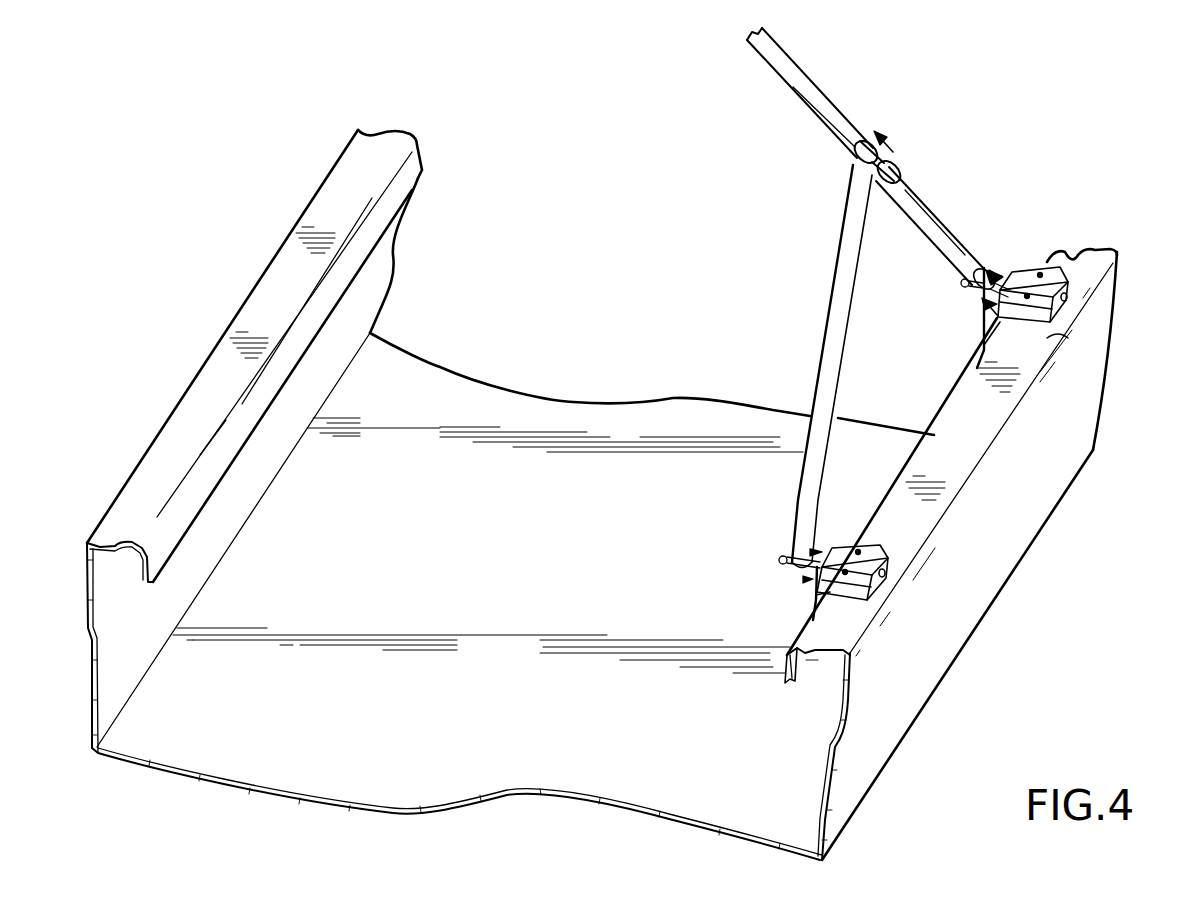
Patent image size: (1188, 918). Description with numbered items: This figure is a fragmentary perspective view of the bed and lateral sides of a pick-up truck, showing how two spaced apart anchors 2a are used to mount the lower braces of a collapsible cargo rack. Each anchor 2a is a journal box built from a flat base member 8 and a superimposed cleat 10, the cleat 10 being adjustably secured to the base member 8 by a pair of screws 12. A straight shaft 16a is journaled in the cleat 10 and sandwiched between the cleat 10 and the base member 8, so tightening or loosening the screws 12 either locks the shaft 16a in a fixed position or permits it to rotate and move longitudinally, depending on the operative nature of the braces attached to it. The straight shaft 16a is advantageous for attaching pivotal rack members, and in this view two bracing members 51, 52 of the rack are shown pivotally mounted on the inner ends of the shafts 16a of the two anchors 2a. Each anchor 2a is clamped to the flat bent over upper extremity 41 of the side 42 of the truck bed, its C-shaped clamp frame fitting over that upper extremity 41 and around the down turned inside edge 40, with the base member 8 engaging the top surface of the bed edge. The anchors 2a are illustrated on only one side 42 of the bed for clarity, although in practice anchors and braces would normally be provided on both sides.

The anchor 2a is at (1088, 286).
The base member 8 is at (1065, 335).
The cleat 10 is at (1025, 270).
The screws 12 is at (1043, 277).
The straight shaft 16a is at (963, 287).
The down turned inside edge 40 is at (790, 672).
The flat bent over upper extremity 41 is at (975, 444).
The side of the bed 42 is at (934, 640).
The bracing member 51 is at (828, 380).
The bracing member 52 is at (940, 230).